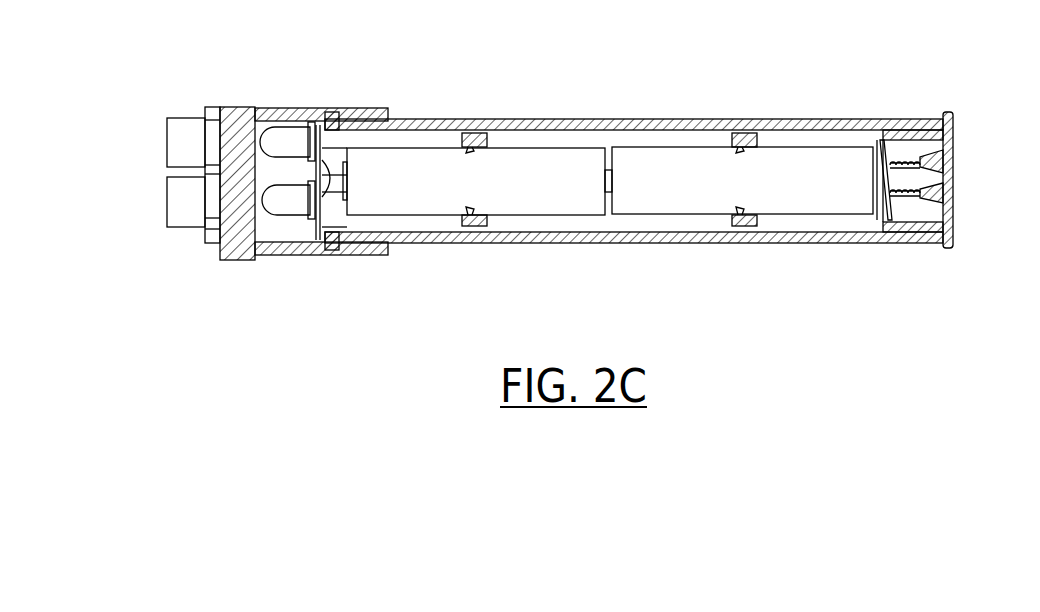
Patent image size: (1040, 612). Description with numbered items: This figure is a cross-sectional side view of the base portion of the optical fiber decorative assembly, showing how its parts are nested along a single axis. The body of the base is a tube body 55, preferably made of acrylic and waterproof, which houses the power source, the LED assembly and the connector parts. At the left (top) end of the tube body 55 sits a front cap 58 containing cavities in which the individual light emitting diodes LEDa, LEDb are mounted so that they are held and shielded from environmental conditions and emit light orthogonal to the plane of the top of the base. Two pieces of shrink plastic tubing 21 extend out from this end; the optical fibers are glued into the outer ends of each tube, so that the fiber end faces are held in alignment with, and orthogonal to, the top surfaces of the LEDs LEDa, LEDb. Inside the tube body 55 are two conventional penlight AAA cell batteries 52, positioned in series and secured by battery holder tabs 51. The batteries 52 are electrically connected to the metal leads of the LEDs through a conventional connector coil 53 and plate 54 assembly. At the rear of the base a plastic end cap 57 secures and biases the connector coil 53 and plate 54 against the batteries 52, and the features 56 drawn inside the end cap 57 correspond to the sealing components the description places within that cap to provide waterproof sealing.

The shrink plastic tubing 21 is at (183, 130).
The first light emitting diode LEDa is at (297, 140).
The second light emitting diode LEDb is at (290, 210).
The battery holder tabs 51 is at (474, 133).
The batteries 52 is at (510, 185).
The connector coil 53 is at (880, 225).
The plate 54 is at (323, 244).
The tube body 55 is at (630, 243).
The springs / contacts 56 is at (908, 225).
The plastic end cap 57 is at (953, 152).
The front cap 58 is at (290, 255).